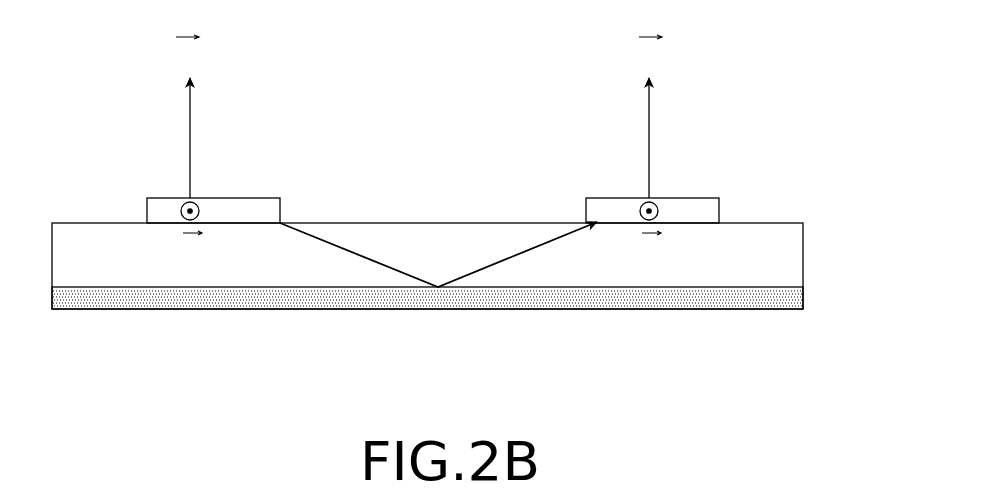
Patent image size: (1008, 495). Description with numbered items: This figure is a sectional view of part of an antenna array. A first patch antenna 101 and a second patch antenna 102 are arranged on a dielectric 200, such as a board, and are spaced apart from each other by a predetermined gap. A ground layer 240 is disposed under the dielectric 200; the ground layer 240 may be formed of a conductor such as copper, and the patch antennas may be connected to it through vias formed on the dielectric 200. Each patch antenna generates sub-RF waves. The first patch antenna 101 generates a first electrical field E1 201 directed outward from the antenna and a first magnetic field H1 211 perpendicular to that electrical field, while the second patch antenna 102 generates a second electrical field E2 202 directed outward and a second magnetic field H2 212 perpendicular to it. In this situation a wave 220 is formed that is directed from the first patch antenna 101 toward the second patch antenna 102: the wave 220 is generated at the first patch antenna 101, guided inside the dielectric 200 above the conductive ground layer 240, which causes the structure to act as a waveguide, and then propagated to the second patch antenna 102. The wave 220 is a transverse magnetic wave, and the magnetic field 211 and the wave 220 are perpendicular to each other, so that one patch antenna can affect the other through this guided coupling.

The first patch antenna 101 is at (225, 198).
The second patch antenna 102 is at (683, 198).
The dielectric 200 is at (802, 255).
The first electrical field E1 201 is at (192, 124).
The second electrical field E2 202 is at (651, 125).
The first magnetic field H1 211 is at (184, 204).
The second magnetic field H2 212 is at (642, 204).
The wave 220 is at (373, 258).
The ground layer 240 is at (802, 300).